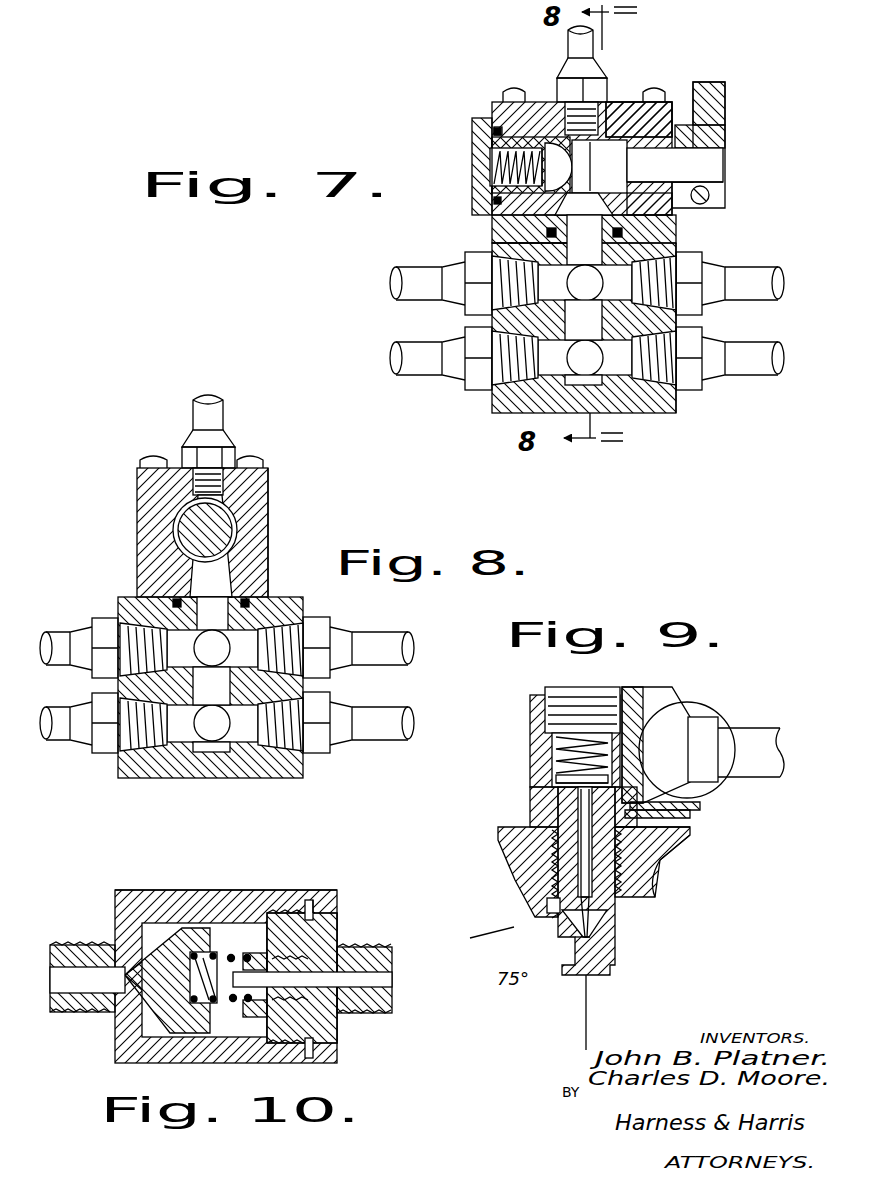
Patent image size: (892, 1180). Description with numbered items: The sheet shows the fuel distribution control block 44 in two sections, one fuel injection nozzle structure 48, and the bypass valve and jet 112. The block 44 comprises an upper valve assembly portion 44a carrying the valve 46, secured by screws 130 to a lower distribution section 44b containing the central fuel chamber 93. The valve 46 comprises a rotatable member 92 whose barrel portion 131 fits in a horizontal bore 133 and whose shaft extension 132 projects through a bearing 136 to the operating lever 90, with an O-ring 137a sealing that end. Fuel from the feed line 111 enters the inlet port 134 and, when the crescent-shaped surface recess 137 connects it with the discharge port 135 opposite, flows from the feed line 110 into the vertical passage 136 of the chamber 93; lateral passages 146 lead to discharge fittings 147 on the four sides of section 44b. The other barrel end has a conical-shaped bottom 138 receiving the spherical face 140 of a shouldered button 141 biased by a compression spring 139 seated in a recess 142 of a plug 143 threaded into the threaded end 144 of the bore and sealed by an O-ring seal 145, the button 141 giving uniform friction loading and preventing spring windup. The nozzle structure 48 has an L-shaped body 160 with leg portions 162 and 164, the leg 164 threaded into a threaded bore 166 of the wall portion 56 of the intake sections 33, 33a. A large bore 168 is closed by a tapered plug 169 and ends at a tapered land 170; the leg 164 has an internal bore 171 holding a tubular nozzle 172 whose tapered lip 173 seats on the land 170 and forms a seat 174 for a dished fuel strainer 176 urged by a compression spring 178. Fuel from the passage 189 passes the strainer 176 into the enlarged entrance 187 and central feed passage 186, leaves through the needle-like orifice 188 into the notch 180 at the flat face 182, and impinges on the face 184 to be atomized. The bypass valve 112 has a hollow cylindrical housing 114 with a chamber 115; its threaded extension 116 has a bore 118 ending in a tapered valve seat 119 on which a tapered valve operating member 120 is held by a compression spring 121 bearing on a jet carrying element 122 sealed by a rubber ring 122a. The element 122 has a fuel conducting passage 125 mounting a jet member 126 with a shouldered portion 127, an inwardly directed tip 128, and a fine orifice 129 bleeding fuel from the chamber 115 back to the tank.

In FIG. 9, the intake section 33 is at (702, 836).
In FIG. 9, the intake section 33a is at (728, 839).
In FIG. 7, the fuel distribution control block 44 is at (482, 228).
In FIG. 8, the fuel distribution control block 44 is at (134, 536).
In FIG. 7, the upper valve assembly portion 44a is at (678, 223).
In FIG. 8, the upper valve assembly portion 44a is at (268, 505).
In FIG. 8, the lower distribution section 44b is at (305, 604).
In FIG. 7, the valve 46 is at (652, 125).
In FIG. 8, the valve 46 is at (185, 520).
In FIG. 9, the fuel injection nozzle structure 48 is at (614, 980).
In FIG. 9, the wall portion 56 is at (680, 848).
In FIG. 7, the operating lever 90 is at (716, 104).
In FIG. 7, the rotatable member 92 is at (618, 130).
In FIG. 8, the rotatable member 92 is at (270, 486).
In FIG. 7, the central fuel chamber 93 is at (606, 324).
In FIG. 8, the central fuel chamber 93 is at (220, 686).
In FIG. 7, the feed line 110 is at (597, 36).
In FIG. 8, the feed line 110 is at (200, 408).
In FIG. 7, the feed line 111 is at (570, 60).
In FIG. 8, the feed line 111 is at (228, 443).
In FIG. 10, the combination bypass check valve and jet 112 is at (160, 883).
In FIG. 10, the hollow cylindrical housing 114 is at (200, 893).
In FIG. 10, the chamber 115 is at (228, 935).
In FIG. 10, the threaded extension 116 is at (100, 1020).
In FIG. 10, the bore 118 is at (108, 985).
In FIG. 10, the tapered valve seat 119 is at (128, 970).
In FIG. 10, the tapered valve operating member 120 is at (160, 955).
In FIG. 10, the compression spring 121 is at (205, 1040).
In FIG. 10, the jet carrying element 122 is at (337, 935).
In FIG. 10, the rubber ring 122a is at (313, 905).
In FIG. 10, the fuel conducting passage 125 is at (392, 985).
In FIG. 10, the jet member 126 is at (337, 908).
In FIG. 10, the shouldered portion 127 is at (275, 912).
In FIG. 10, the inwardly directed tip 128 is at (230, 1040).
In FIG. 10, the orifice 129 is at (337, 1030).
In FIG. 7, the screws 130 is at (516, 88).
In FIG. 7, the barrel portion 131 is at (601, 166).
In FIG. 8, the barrel portion 131 is at (235, 548).
In FIG. 7, the shaft extension 132 is at (683, 178).
In FIG. 7, the horizontal bore 133 is at (660, 128).
In FIG. 7, the inlet port 134 is at (603, 98).
In FIG. 8, the inlet port 134 is at (218, 492).
In FIG. 7, the discharge port 135 is at (585, 211).
In FIG. 8, the discharge port 135 is at (245, 590).
In FIG. 7, the vertical passage 136 is at (712, 153).
In FIG. 8, the vertical passage 136 is at (205, 613).
In FIG. 7, the crescent-shaped surface recess 137 is at (649, 205).
In FIG. 8, the crescent-shaped surface recess 137 is at (245, 568).
In FIG. 7, the O-ring 137a is at (690, 148).
In FIG. 7, the conical-shaped bottom 138 is at (570, 140).
In FIG. 7, the compression spring 139 is at (476, 200).
In FIG. 7, the spherical face 140 is at (512, 173).
In FIG. 7, the shouldered button 141 is at (500, 165).
In FIG. 7, the recess 142 is at (495, 126).
In FIG. 7, the plug 143 is at (486, 142).
In FIG. 7, the threaded end 144 is at (503, 128).
In FIG. 7, the O-ring seal 145 is at (493, 138).
In FIG. 7, the lateral passages 146 is at (678, 248).
In FIG. 8, the lateral passages 146 is at (195, 700).
In FIG. 7, the discharge fittings 147 is at (718, 274).
In FIG. 8, the discharge fittings 147 is at (345, 634).
In FIG. 9, the L-shaped body 160 is at (530, 720).
In FIG. 9, the leg portion 162 is at (650, 695).
In FIG. 9, the leg portion 164 is at (532, 807).
In FIG. 9, the threaded bore 166 is at (668, 882).
In FIG. 9, the large bore 168 is at (560, 772).
In FIG. 9, the tapered plug 169 is at (568, 692).
In FIG. 9, the tapered land 170 is at (665, 803).
In FIG. 9, the internal bore 171 is at (540, 890).
In FIG. 9, the tubular nozzle 172 is at (605, 915).
In FIG. 9, the tapered lip 173 is at (560, 785).
In FIG. 9, the seat 174 is at (660, 814).
In FIG. 9, the dished fuel strainer 176 is at (674, 694).
In FIG. 9, the compression spring 178 is at (560, 750).
In FIG. 9, the notch 180 is at (565, 937).
In FIG. 9, the flat face 182 is at (545, 912).
In FIG. 9, the flat face 184 is at (584, 1004).
In FIG. 9, the central feed passage 186 is at (525, 855).
In FIG. 9, the enlarged entrance 187 is at (506, 833).
In FIG. 9, the orifice 188 is at (592, 928).
In FIG. 9, the passage 189 is at (692, 720).